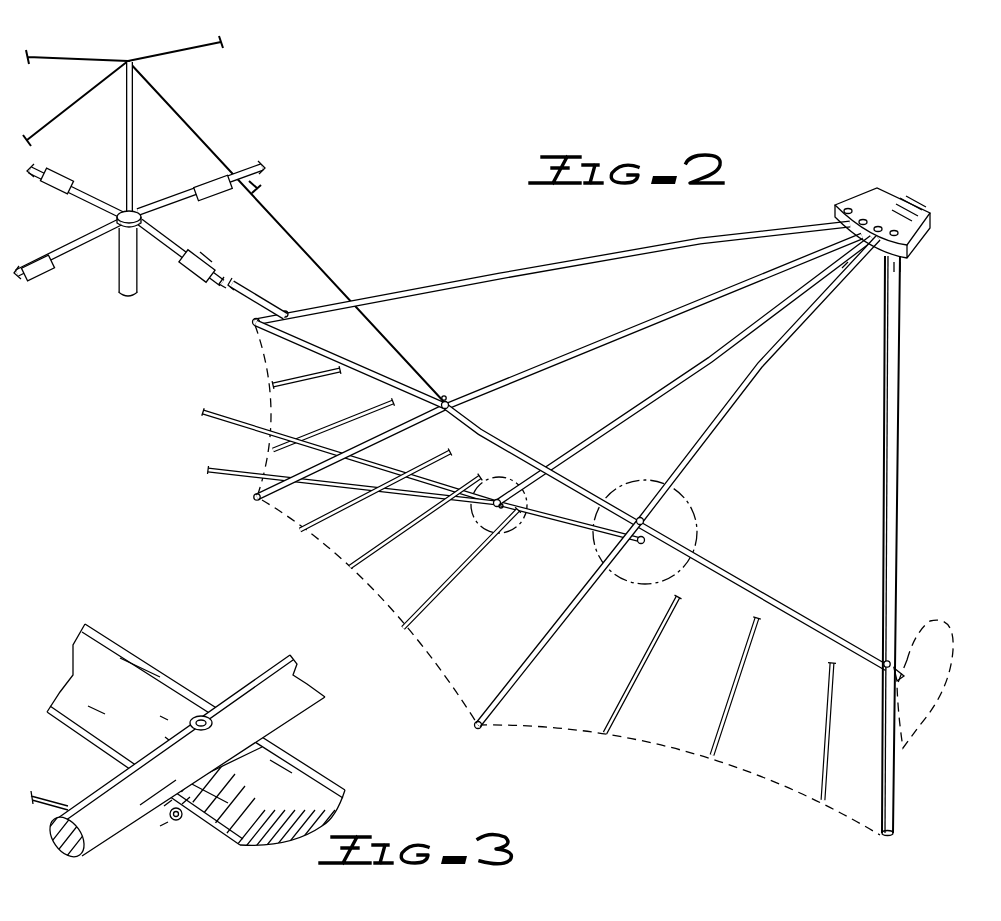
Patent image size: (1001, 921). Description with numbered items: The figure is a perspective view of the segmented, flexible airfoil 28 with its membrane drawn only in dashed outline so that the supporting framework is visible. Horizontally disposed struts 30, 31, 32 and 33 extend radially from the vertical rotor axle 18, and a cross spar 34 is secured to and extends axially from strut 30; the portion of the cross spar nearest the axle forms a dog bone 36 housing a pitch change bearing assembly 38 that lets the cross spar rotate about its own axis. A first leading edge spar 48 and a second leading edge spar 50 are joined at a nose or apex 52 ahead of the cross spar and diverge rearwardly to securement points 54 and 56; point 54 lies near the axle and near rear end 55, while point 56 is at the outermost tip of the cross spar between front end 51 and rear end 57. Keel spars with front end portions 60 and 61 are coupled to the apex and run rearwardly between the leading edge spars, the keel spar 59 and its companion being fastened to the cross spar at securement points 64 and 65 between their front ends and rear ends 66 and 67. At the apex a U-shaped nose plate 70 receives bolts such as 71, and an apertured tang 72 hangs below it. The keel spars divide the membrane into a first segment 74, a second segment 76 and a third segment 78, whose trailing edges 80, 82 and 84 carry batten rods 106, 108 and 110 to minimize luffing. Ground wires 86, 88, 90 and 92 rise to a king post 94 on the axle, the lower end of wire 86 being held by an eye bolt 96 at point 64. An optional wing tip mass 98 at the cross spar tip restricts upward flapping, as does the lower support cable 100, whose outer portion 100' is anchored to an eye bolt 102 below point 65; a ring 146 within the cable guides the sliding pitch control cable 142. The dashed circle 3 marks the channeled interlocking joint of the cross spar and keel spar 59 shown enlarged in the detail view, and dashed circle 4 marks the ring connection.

In FIG. 2, the vertical rotor axle 18 is at (118, 273).
In FIG. 2, the airfoil 28 is at (488, 258).
In FIG. 2, the strut 30 is at (173, 246).
In FIG. 2, the strut 31 is at (166, 198).
In FIG. 2, the strut 32 is at (92, 195).
In FIG. 2, the strut 33 is at (83, 239).
In FIG. 2, the cross spar 34 is at (490, 437).
In FIG. 3, the cross spar 34 is at (163, 679).
In FIG. 2, the dog bone 36 is at (213, 265).
In FIG. 2, the pitch change bearing assembly 38 is at (203, 245).
In FIG. 2, the first leading edge spar 48 is at (540, 266).
In FIG. 2, the second leading edge spar 50 is at (901, 452).
In FIG. 2, the front end 51 is at (902, 283).
In FIG. 2, the apex 52 is at (915, 190).
In FIG. 2, the securement point 54 is at (285, 310).
In FIG. 2, the rear end 55 is at (250, 323).
In FIG. 2, the securement point 56 is at (894, 665).
In FIG. 2, the rear end 57 is at (891, 836).
In FIG. 2, the second keel spar 59 is at (710, 433).
In FIG. 3, the second keel spar 59 is at (251, 686).
In FIG. 2, the front end portion 60 is at (838, 242).
In FIG. 2, the front end portion 61 is at (838, 275).
In FIG. 2, the securement point 64 is at (450, 403).
In FIG. 2, the securement point 65 is at (641, 517).
In FIG. 2, the rear end 66 is at (256, 500).
In FIG. 2, the rear end 67 is at (480, 730).
In FIG. 2, the nose plate 70 is at (862, 200).
In FIG. 2, the bolt 71 is at (888, 195).
In FIG. 2, the apertured tang 72 is at (874, 281).
In FIG. 2, the first segment 74 is at (516, 320).
In FIG. 2, the second segment 76 is at (611, 378).
In FIG. 2, the third segment 78 is at (805, 437).
In FIG. 2, the trailing edge 80 is at (272, 400).
In FIG. 2, the trailing edge 82 is at (372, 592).
In FIG. 2, the trailing edge 84 is at (690, 755).
In FIG. 2, the ground wire 86 is at (169, 104).
In FIG. 2, the ground wire 88 is at (168, 52).
In FIG. 2, the ground wire 90 is at (85, 56).
In FIG. 2, the ground wire 92 is at (74, 101).
In FIG. 2, the king post 94 is at (125, 137).
In FIG. 2, the eye bolt 96 is at (444, 396).
In FIG. 2, the wing tip mass 98 is at (933, 620).
In FIG. 2, the lower support cable 100 is at (336, 455).
In FIG. 2, the support cable portion 100' is at (569, 531).
In FIG. 3, the support cable portion 100' is at (58, 784).
In FIG. 2, the eye bolt 102 is at (642, 544).
In FIG. 3, the eye bolt 102 is at (170, 822).
In FIG. 2, the batten rod 106 is at (305, 378).
In FIG. 2, the batten rod 108 is at (337, 512).
In FIG. 2, the batten rod 110 is at (636, 676).
In FIG. 2, the pitch control cable 142 is at (336, 486).
In FIG. 2, the ring 146 is at (492, 512).
In FIG. 2, the dashed lines 3 is at (642, 482).
In FIG. 2, the dashed lines 4 is at (488, 480).